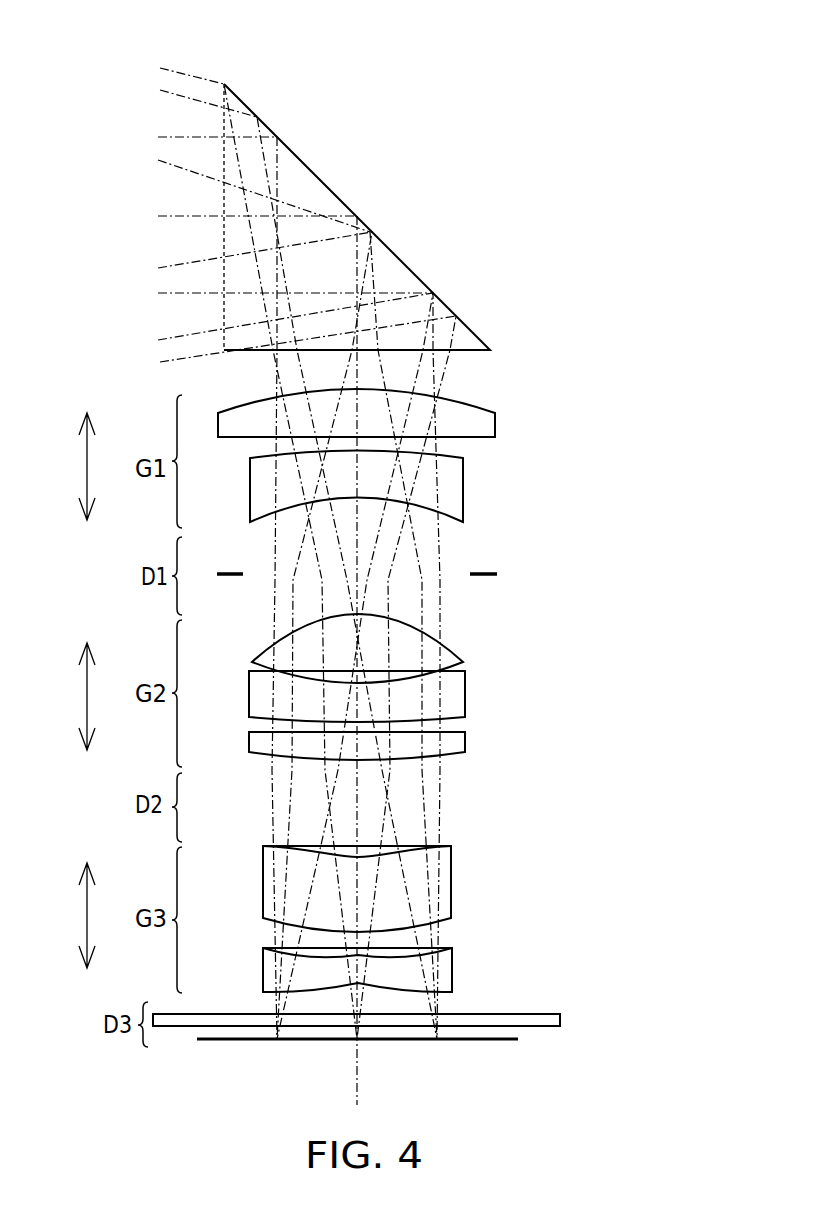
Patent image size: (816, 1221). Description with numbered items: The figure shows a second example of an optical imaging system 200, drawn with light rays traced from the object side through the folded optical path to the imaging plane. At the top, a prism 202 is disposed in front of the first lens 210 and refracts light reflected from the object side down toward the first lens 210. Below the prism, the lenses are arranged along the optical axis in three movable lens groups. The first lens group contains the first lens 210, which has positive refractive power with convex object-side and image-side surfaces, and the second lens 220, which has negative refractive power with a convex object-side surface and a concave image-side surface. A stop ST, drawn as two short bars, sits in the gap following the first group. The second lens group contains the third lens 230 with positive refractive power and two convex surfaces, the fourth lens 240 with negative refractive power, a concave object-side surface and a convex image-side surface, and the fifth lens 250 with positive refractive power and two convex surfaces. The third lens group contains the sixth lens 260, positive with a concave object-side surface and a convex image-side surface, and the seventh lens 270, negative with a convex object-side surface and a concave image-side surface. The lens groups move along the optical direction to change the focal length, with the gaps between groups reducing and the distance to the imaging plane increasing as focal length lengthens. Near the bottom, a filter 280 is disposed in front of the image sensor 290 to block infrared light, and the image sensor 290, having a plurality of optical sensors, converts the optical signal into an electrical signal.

The optical imaging system 200 is at (452, 168).
The prism 202 is at (463, 322).
The first lens 210 is at (495, 425).
The second lens 220 is at (460, 490).
The stop ST is at (497, 574).
The third lens 230 is at (448, 645).
The fourth lens 240 is at (457, 695).
The fifth lens 250 is at (458, 750).
The sixth lens 260 is at (452, 883).
The seventh lens 270 is at (452, 970).
The filter 280 is at (562, 1021).
The image sensor 290 is at (518, 1040).